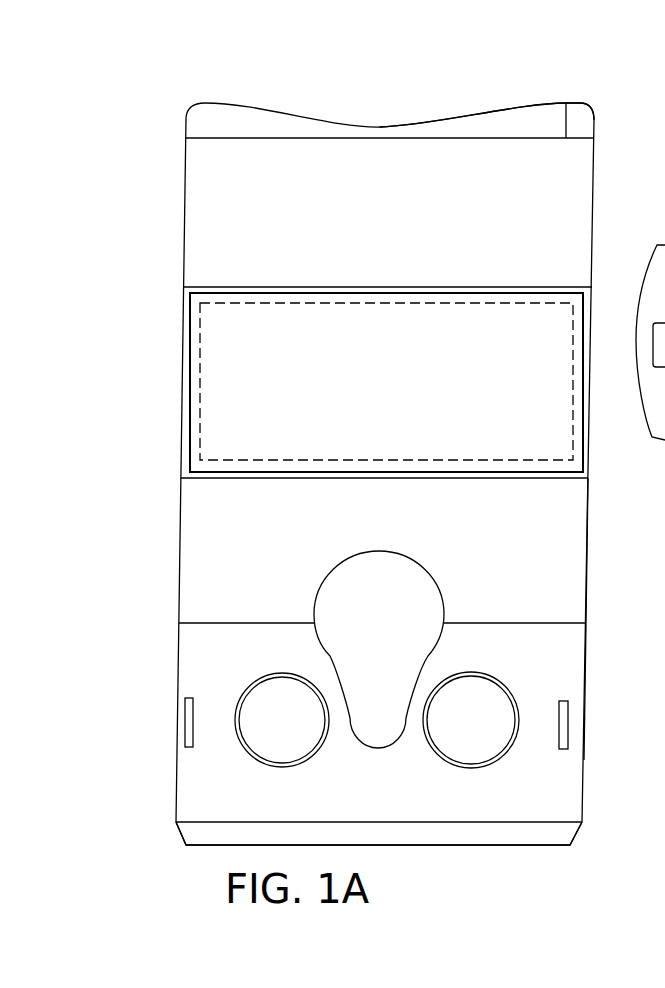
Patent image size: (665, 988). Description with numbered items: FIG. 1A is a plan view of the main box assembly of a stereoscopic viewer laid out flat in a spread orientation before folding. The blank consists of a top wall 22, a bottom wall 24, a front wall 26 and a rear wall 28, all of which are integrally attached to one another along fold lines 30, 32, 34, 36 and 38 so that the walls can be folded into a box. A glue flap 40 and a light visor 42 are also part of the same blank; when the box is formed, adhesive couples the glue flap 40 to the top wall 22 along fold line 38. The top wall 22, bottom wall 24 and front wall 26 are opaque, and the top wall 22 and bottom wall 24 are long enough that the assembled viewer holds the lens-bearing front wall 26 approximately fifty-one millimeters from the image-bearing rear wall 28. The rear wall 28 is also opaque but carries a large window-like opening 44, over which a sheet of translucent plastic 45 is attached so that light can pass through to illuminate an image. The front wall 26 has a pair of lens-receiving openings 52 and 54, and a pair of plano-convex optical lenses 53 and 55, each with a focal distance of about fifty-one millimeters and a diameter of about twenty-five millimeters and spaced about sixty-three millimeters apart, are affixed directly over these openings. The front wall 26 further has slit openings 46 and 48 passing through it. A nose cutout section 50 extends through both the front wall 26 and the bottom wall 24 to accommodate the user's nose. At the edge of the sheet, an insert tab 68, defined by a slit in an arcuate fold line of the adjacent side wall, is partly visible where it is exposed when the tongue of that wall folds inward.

The top wall 22 is at (567, 170).
The bottom wall 24 is at (570, 527).
The front wall 26 is at (565, 658).
The rear wall 28 is at (190, 303).
The fold line 30 is at (553, 287).
The fold line 32 is at (205, 478).
The fold line 34 is at (200, 623).
The fold line 36 is at (544, 826).
The fold line 38 is at (566, 103).
The glue flap 40 is at (567, 834).
The light visor 42 is at (521, 120).
The window opening 44 is at (225, 402).
The sheet of translucent plastic 45 is at (218, 336).
The slit opening 46 is at (565, 718).
The slit opening 48 is at (190, 715).
The nose cutout section 50 is at (356, 579).
The lens-receiving opening 52 is at (245, 745).
The optical lens 53 is at (265, 753).
The lens-receiving opening 54 is at (460, 770).
The optical lens 55 is at (472, 760).
The insert tab 68 is at (660, 325).